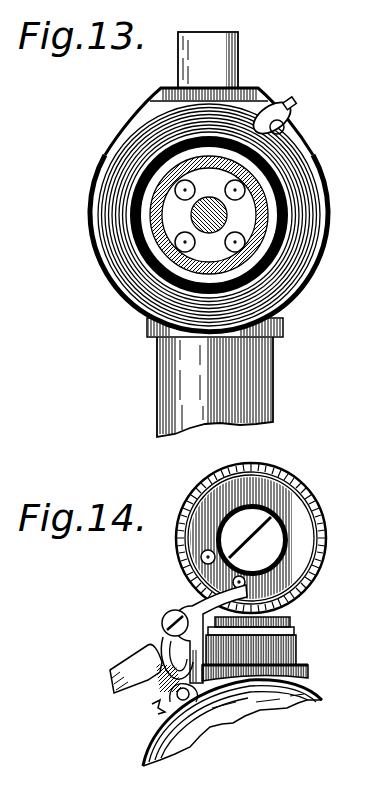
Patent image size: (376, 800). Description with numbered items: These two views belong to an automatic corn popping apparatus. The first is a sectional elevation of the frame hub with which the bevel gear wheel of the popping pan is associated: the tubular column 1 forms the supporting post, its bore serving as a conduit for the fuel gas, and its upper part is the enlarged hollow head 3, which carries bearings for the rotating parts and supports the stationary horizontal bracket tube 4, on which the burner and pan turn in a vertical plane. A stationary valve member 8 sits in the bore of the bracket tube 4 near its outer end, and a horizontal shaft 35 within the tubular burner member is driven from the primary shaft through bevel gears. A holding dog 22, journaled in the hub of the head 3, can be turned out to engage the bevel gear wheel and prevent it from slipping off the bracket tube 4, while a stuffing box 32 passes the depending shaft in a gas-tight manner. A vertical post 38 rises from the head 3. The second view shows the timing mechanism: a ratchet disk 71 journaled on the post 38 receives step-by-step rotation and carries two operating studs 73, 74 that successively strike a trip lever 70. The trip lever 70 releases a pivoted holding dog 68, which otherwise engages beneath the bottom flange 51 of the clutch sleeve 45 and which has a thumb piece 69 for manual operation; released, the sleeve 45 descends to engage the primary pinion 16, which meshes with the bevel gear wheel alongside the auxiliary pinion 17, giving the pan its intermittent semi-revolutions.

In FIG. 13, the tubular column 1 is at (274, 389).
In FIG. 13, the hollow head 3 is at (122, 137).
In FIG. 14, the hollow head 3 is at (178, 748).
In FIG. 13, the bracket tube 4 is at (151, 216).
In FIG. 13, the valve member 8 is at (194, 187).
In FIG. 13, the holding dog 22 is at (297, 105).
In FIG. 13, the stuffing box 32 is at (264, 112).
In FIG. 13, the horizontal shaft 35 is at (193, 215).
In FIG. 13, the vertical post 38 is at (242, 42).
In FIG. 14, the primary pinion 16 is at (298, 650).
In FIG. 14, the auxiliary pinion 17 is at (308, 674).
In FIG. 14, the clutch sleeve 45 is at (291, 619).
In FIG. 14, the bottom flange 51 is at (296, 631).
In FIG. 14, the holding dog 68 is at (189, 641).
In FIG. 14, the thumb piece 69 is at (121, 688).
In FIG. 14, the trip lever 70 is at (186, 611).
In FIG. 14, the ratchet disk 71 is at (304, 532).
In FIG. 14, the operating stud 73 is at (241, 577).
In FIG. 14, the operating stud 74 is at (200, 557).